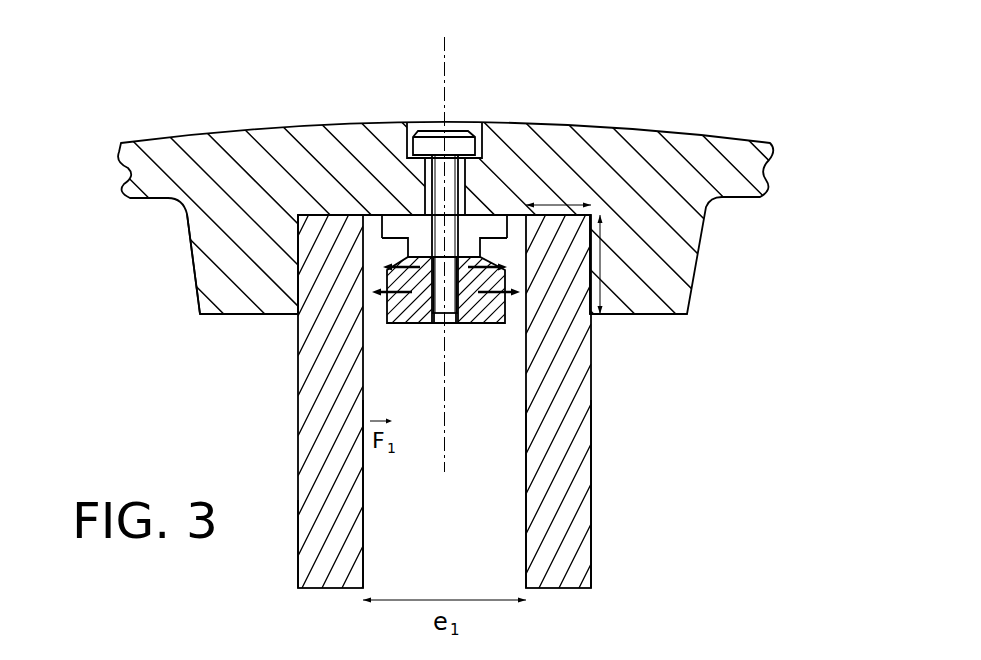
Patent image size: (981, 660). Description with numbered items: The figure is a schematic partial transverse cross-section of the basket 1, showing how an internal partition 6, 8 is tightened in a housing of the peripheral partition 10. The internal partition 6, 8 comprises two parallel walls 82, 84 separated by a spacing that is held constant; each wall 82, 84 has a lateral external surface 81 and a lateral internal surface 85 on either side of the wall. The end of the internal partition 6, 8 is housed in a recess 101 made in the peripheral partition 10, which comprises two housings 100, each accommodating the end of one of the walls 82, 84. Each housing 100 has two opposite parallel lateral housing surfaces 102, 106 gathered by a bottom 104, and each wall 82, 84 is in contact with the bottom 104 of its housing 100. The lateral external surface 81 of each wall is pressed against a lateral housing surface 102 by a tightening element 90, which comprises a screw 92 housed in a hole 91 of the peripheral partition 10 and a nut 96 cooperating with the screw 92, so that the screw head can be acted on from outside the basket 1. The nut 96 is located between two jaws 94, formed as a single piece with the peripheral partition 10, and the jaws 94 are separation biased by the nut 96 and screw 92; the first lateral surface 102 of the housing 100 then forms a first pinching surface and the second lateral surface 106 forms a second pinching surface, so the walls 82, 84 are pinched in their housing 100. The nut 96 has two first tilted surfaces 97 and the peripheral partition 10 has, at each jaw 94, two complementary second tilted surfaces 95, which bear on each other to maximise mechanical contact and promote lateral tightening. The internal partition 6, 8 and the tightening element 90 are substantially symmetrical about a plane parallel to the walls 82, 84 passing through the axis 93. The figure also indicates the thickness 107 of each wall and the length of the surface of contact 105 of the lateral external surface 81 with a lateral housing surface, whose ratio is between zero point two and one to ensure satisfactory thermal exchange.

The basket 1 is at (287, 100).
The peripheral partition 10 is at (709, 163).
The recess 101 is at (267, 228).
The housing 100 is at (610, 250).
The lateral housing surface 102 is at (298, 270).
The bottom 104 is at (310, 257).
The tightening element 90 is at (456, 174).
The hole 91 is at (462, 178).
The screw 92 is at (427, 132).
The axis 93 is at (444, 48).
The jaw 94 is at (471, 227).
The second tilted surface 95 is at (512, 220).
The nut 96 is at (472, 323).
The first tilted surface 97 is at (488, 323).
The surface of contact 105 is at (602, 272).
The lateral housing surface 106 is at (398, 292).
The thickness 107 is at (572, 203).
The lateral external surface 81 is at (460, 383).
The wall 82 is at (578, 513).
The wall 84 is at (320, 543).
The lateral internal surface 85 is at (363, 483).
The internal partition 6 is at (610, 392).
The internal partition 8 is at (612, 541).